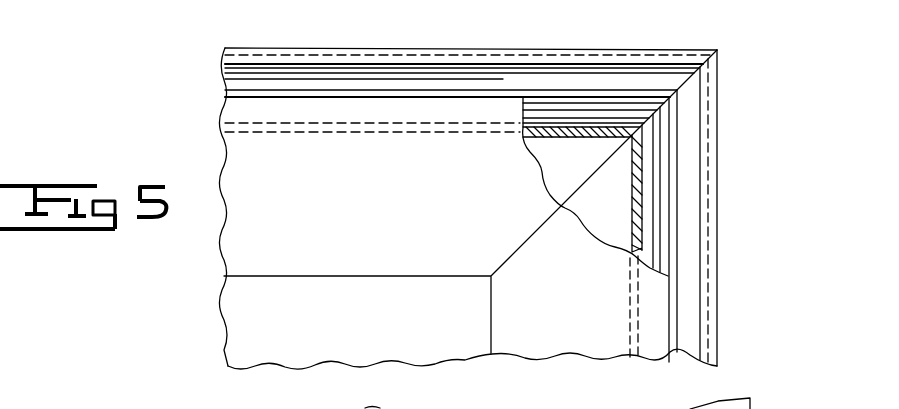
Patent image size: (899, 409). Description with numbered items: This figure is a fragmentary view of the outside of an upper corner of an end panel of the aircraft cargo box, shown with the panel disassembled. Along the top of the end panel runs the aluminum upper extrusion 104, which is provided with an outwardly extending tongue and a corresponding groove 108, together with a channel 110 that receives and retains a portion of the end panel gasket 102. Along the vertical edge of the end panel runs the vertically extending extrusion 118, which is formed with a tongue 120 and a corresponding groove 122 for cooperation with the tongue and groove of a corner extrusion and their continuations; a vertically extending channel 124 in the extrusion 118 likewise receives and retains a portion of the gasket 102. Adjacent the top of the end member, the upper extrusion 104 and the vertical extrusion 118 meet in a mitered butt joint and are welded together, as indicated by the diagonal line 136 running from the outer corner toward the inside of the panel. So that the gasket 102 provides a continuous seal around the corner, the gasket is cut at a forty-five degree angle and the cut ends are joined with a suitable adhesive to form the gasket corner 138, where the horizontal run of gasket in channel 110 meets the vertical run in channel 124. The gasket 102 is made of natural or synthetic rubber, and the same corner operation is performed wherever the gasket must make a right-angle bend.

The end panel gasket 102 is at (622, 110).
The upper extrusion 104 is at (273, 108).
The groove 108 is at (508, 94).
The channel 110 is at (563, 130).
The vertically extending extrusion 118 is at (557, 352).
The tongue 120 is at (715, 256).
The groove 122 is at (672, 188).
The vertically extending channel 124 is at (634, 212).
The line 136 is at (525, 247).
The gasket corner 138 is at (655, 121).